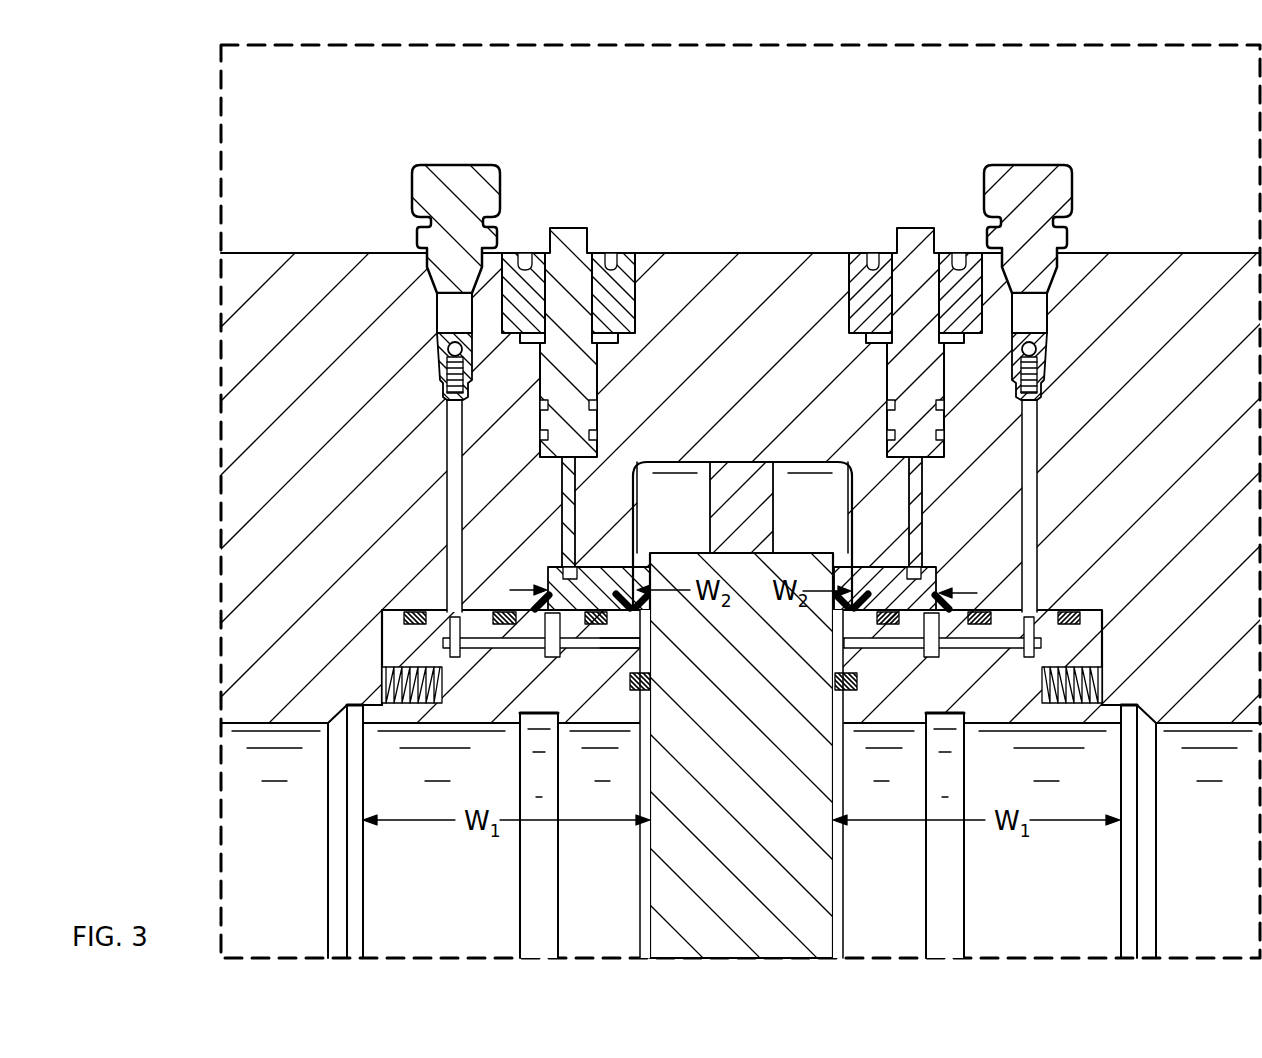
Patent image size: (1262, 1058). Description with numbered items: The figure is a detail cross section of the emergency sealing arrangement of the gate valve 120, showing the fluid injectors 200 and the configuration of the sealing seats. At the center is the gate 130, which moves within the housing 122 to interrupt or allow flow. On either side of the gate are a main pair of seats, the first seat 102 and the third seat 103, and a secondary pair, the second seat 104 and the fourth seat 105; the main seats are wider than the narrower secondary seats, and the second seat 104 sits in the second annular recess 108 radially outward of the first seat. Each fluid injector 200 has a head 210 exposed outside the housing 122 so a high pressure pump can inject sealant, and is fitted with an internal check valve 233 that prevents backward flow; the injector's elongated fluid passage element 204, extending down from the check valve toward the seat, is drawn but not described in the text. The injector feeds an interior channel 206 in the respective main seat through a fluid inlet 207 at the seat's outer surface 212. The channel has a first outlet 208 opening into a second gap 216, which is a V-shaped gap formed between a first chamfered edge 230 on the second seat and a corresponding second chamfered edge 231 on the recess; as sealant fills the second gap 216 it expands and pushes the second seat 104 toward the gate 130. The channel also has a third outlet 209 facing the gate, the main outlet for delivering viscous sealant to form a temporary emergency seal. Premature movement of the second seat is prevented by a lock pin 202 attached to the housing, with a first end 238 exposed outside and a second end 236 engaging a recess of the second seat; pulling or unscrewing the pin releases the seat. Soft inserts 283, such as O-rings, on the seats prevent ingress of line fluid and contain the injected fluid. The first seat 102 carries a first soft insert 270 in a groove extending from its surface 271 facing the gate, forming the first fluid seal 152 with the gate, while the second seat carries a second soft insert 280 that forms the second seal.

The first seat 102 is at (382, 640).
The third seat 103 is at (1103, 612).
The second seat 104 is at (630, 548).
The fourth seat 105 is at (850, 545).
The second annular recess 108 is at (587, 565).
The gate valve 120 is at (1145, 253).
The housing 122 is at (1218, 256).
The gate 130 is at (722, 798).
The first fluid seal 152 is at (655, 688).
The fluid injector 200 is at (412, 190).
The lock pin 202 is at (598, 262).
The rod 204 is at (1035, 518).
The interior channel 206 is at (452, 630).
The fluid inlet 207 is at (450, 610).
The first outlet 208 is at (583, 620).
The third outlet 209 is at (672, 648).
The head 210 is at (455, 165).
The outer surface 212 is at (425, 612).
The second gap 216 is at (523, 603).
The first chamfered edge 230 is at (550, 608).
The second chamfered edge 231 is at (588, 615).
The check valve 233 is at (437, 350).
The second end 236 is at (565, 500).
The first end 238 is at (562, 228).
The first soft insert 270 is at (628, 700).
The surface 271 is at (655, 700).
The second soft insert 280 is at (655, 608).
The soft inserts 283 is at (405, 612).